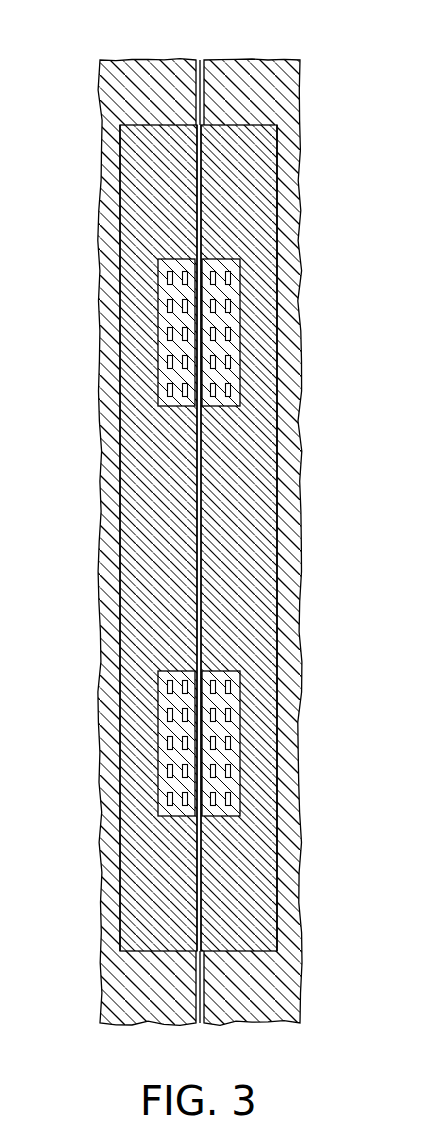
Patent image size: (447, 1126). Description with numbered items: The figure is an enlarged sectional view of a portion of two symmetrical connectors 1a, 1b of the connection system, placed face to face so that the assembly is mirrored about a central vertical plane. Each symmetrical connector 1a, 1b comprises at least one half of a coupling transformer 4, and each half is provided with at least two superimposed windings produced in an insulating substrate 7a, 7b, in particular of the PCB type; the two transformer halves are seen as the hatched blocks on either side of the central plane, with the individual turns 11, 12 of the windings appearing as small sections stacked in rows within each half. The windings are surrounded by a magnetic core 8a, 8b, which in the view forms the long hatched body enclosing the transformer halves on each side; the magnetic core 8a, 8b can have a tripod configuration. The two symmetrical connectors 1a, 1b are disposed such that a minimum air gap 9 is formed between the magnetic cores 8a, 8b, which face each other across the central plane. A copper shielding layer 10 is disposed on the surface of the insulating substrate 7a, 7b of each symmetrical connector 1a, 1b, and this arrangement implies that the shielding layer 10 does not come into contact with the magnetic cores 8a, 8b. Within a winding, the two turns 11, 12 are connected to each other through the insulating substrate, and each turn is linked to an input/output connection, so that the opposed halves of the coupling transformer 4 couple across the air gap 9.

The insulating substrate 7a is at (150, 76).
The insulating substrate 7b is at (247, 76).
The symmetrical connector 1a is at (94, 265).
The symmetrical connector 1b is at (306, 283).
The magnetic core 8a is at (114, 407).
The magnetic core 8b is at (283, 407).
The air gap 9 is at (210, 518).
The copper shielding layer 10 is at (210, 988).
The coupling transformer 4 is at (246, 317).
The turn 11 is at (217, 250).
The turn 12 is at (232, 250).